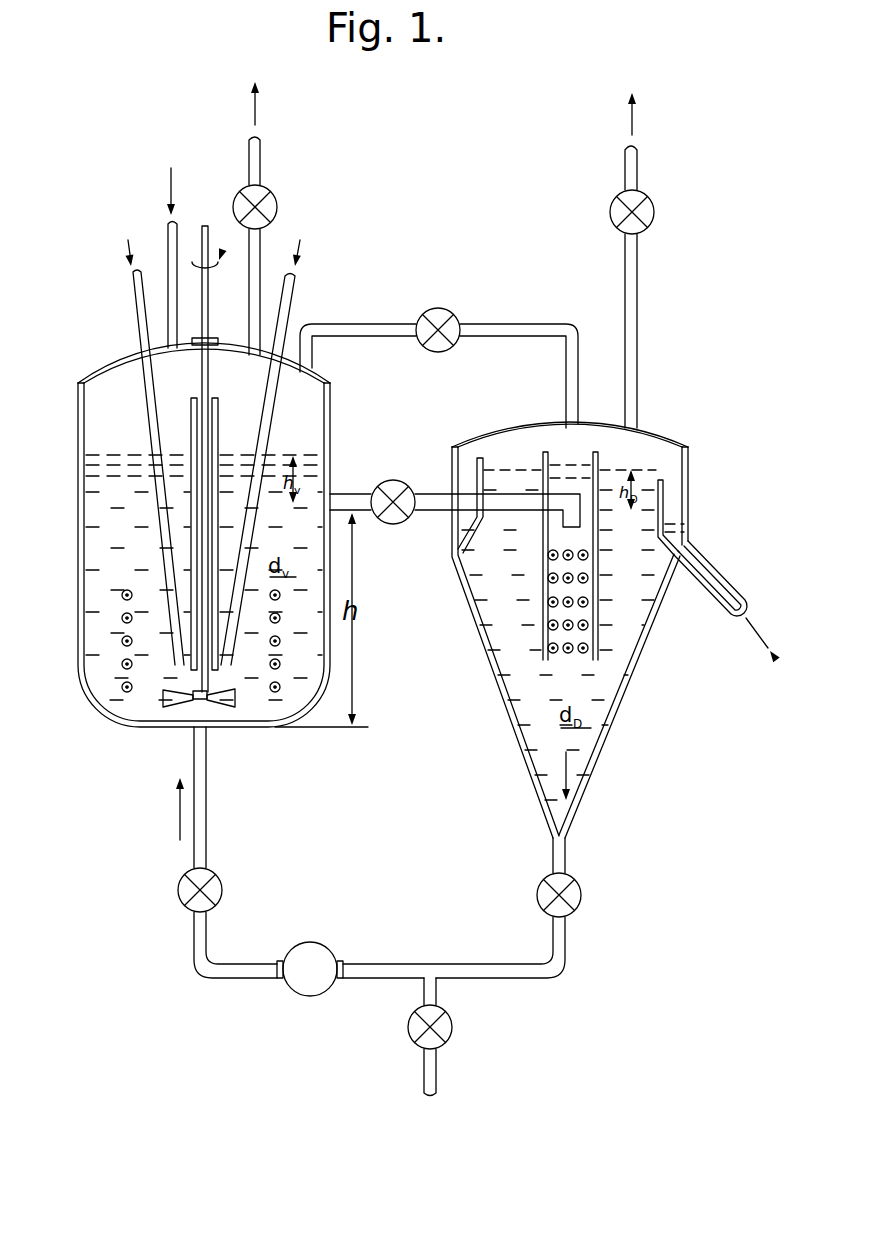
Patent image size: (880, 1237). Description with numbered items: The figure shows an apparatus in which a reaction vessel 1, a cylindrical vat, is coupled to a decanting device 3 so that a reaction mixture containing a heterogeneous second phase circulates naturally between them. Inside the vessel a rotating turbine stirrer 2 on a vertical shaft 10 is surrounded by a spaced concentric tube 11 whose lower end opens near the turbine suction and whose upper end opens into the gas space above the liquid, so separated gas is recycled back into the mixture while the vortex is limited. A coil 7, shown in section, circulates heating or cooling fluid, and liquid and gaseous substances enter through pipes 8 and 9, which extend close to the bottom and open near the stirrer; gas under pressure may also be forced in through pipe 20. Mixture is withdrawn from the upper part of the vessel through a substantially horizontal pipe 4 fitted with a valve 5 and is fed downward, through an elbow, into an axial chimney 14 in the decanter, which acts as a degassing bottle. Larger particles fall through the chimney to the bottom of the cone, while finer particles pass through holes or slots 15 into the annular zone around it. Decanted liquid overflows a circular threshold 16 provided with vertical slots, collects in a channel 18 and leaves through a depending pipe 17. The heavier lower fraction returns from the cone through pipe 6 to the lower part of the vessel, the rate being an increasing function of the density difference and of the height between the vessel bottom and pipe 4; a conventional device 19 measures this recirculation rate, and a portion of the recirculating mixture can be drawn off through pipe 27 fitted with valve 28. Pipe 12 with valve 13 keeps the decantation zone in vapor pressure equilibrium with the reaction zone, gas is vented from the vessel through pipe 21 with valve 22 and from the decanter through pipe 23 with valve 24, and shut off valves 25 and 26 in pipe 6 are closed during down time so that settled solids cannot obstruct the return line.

The reaction vessel 1 is at (78, 492).
The turbine stirrer 2 is at (187, 700).
The decanting device 3 is at (652, 634).
The horizontal pipe 4 is at (353, 493).
The valve 5 is at (398, 485).
The return pipe 6 is at (567, 945).
The coil 7 is at (280, 598).
The feed pipe 8 is at (133, 289).
The feed pipe 9 is at (294, 285).
The shaft 10 is at (231, 300).
The concentric tube 11 is at (219, 413).
The pipe 12 is at (368, 327).
The valve 13 is at (440, 312).
The axial chimney 14 is at (598, 458).
The holes or slots 15 is at (581, 660).
The circular threshold 16 is at (470, 476).
The depending pipe 17 is at (728, 583).
The channel 18 is at (680, 520).
The measuring device 19 is at (308, 940).
The pipe 20 is at (168, 234).
The gas withdrawal pipe 21 is at (252, 273).
The valve 22 is at (273, 195).
The gas withdrawal pipe 23 is at (640, 328).
The valve 24 is at (657, 212).
The shut off valve 25 is at (176, 886).
The shut off valve 26 is at (582, 892).
The withdrawal pipe 27 is at (434, 992).
The valve 28 is at (407, 1040).